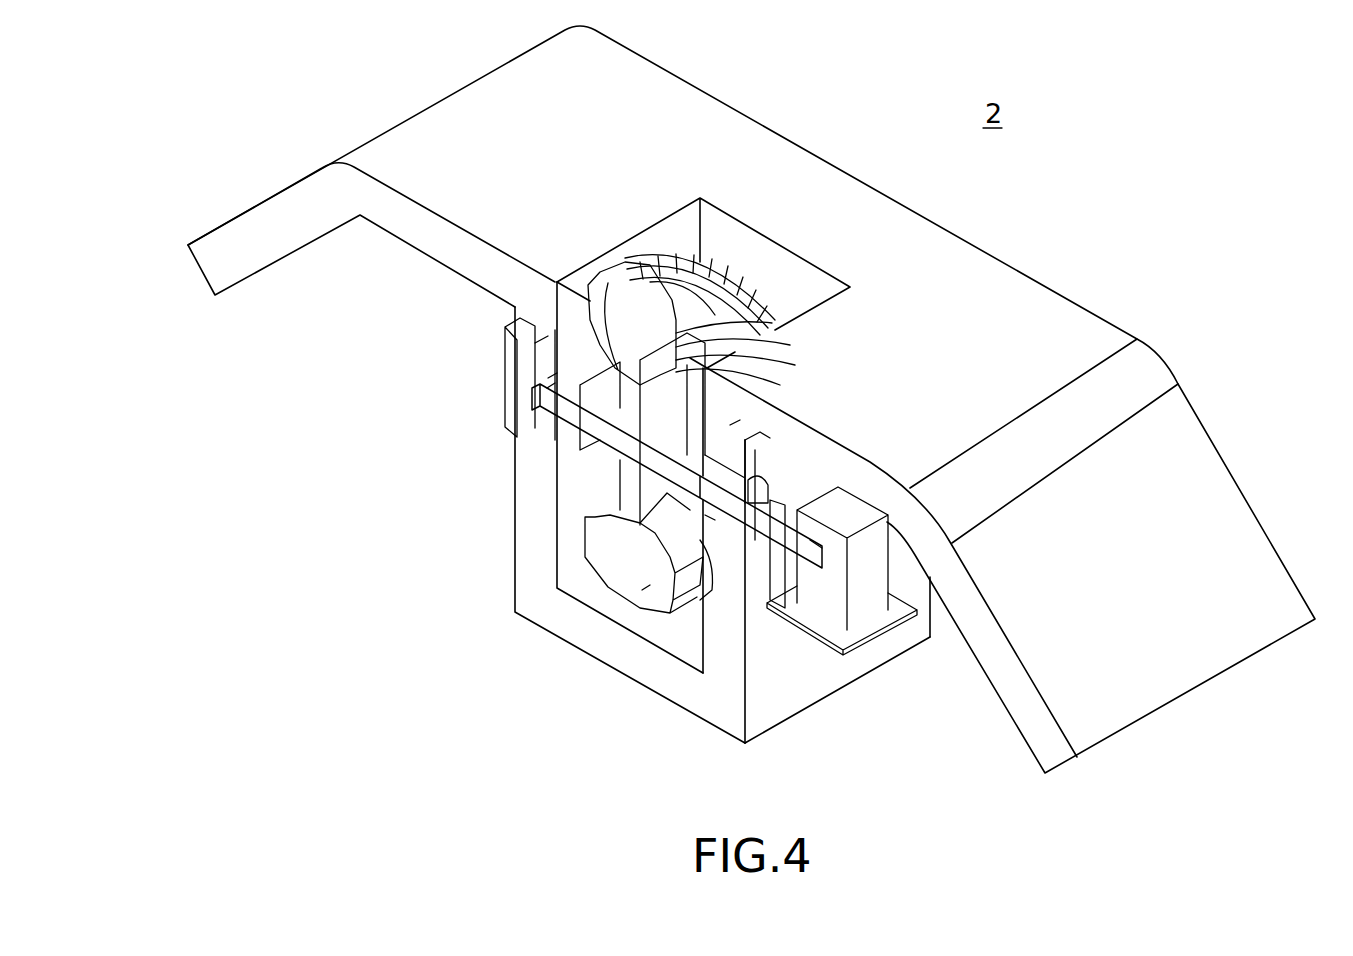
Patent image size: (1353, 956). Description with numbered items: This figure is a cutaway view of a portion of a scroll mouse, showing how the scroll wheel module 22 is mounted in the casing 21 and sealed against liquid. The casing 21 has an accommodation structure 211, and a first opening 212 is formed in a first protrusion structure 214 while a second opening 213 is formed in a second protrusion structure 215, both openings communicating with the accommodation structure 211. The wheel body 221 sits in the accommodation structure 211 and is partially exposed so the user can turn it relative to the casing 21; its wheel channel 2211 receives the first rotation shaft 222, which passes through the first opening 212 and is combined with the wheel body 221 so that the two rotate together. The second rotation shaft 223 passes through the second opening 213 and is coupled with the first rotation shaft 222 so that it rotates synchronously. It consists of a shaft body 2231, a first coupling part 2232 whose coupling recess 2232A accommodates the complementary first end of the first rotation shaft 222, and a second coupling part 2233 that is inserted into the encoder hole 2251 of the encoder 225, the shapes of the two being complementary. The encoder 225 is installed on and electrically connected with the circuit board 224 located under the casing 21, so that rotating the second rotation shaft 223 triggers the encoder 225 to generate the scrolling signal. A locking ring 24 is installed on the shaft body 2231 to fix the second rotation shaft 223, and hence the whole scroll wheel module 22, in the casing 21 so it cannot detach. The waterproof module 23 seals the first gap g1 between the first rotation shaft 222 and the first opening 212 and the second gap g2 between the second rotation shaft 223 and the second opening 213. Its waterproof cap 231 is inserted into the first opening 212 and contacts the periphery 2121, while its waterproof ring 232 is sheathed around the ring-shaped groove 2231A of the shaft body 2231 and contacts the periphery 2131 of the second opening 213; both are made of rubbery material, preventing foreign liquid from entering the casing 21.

The casing 21 is at (1003, 280).
The accommodation structure 211 is at (800, 285).
The first opening 212 is at (535, 403).
The periphery of the first opening 2121 is at (548, 385).
The second opening 213 is at (748, 600).
The periphery of the second opening 2131 is at (748, 442).
The first protrusion structure 214 is at (513, 563).
The second protrusion structure 215 is at (800, 690).
The scroll wheel module 22 is at (674, 456).
The wheel body 221 is at (598, 300).
The first rotation shaft 222 is at (540, 432).
The wheel channel 2211 is at (600, 443).
The second rotation shaft 223 is at (602, 523).
The shaft body 2231 is at (715, 540).
The ring-shaped groove 2231A is at (723, 467).
The first coupling part 2232 is at (690, 528).
The coupling recess 2232A is at (735, 430).
The second coupling part 2233 is at (795, 640).
The circuit board 224 is at (905, 615).
The encoder 225 is at (877, 557).
The encoder hole 2251 is at (813, 537).
The locking ring 24 is at (710, 517).
The waterproof module 23 is at (523, 558).
The waterproof cap 231 is at (535, 378).
The waterproof ring 232 is at (690, 700).
The first gap g1 is at (550, 378).
The second gap g2 is at (642, 590).